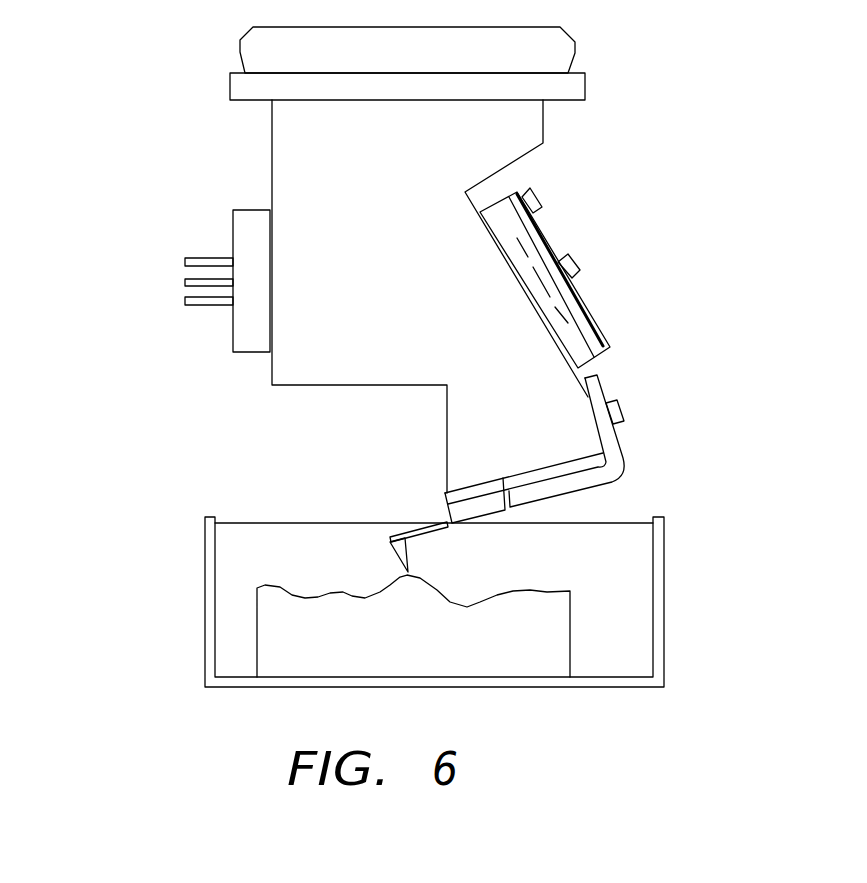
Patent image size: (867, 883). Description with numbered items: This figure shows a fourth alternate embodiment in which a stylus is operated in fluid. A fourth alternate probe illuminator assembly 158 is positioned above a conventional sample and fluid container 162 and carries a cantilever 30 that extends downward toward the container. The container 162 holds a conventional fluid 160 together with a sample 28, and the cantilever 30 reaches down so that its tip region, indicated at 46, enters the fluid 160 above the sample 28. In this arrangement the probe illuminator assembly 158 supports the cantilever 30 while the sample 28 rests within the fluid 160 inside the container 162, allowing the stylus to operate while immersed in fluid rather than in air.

The probe illuminator assembly 158 is at (540, 166).
The fluid 160 is at (257, 522).
The soldering tip 46 is at (390, 548).
The cantilever 30 is at (393, 527).
The sample 28 is at (543, 588).
The sample and fluid container 162 is at (203, 622).